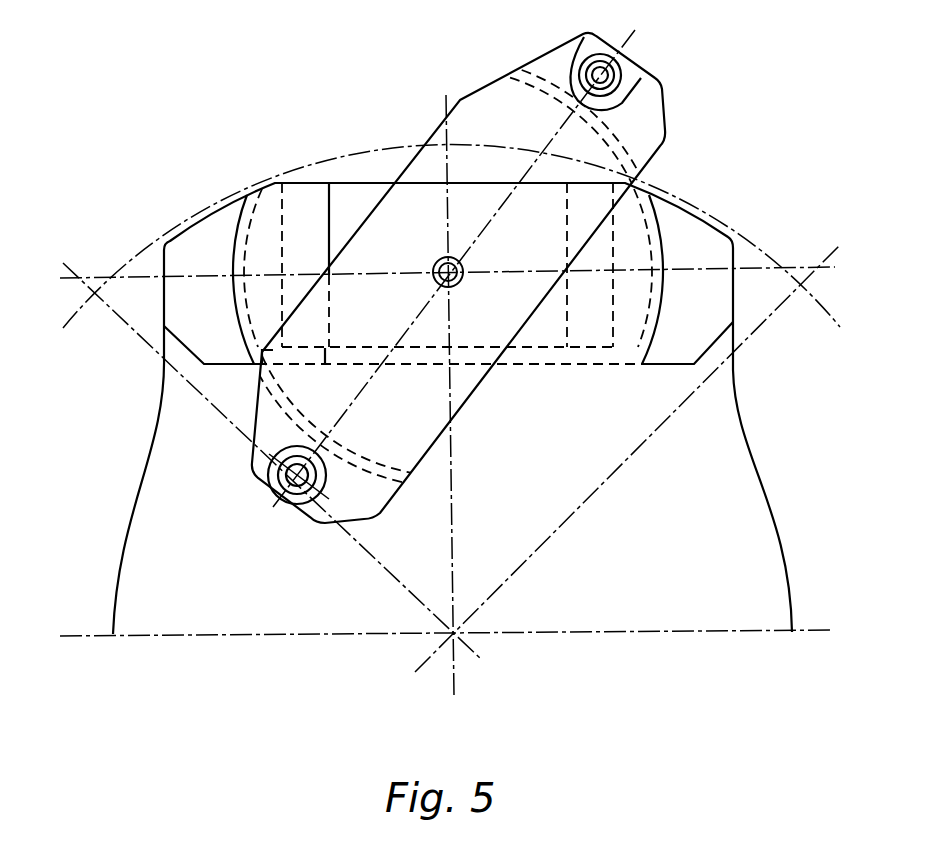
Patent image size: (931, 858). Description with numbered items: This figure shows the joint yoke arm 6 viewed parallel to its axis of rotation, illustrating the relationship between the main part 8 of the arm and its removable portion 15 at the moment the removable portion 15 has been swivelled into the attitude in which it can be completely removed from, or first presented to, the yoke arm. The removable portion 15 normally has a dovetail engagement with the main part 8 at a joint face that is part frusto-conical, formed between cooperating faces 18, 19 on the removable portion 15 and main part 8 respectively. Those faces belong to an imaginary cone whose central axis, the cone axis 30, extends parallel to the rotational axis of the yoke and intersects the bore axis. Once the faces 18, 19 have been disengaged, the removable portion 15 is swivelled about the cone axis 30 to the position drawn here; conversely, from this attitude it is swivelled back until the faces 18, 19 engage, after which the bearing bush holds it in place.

The arm 6 is at (174, 174).
The main part 8 is at (195, 253).
The removable portion 15 is at (647, 130).
The cooperating face 18 is at (502, 77).
The cooperating face 19 is at (247, 195).
The cone axis 30 is at (440, 262).